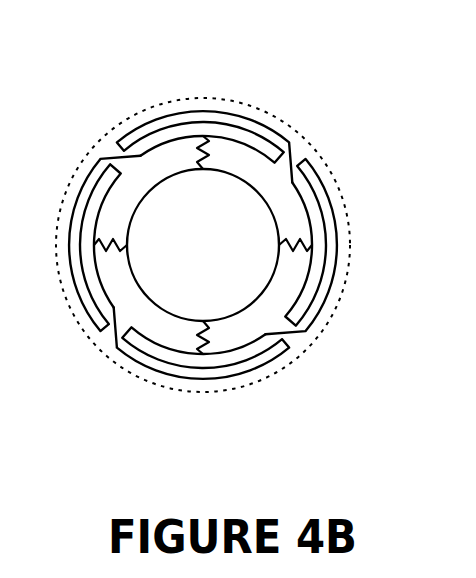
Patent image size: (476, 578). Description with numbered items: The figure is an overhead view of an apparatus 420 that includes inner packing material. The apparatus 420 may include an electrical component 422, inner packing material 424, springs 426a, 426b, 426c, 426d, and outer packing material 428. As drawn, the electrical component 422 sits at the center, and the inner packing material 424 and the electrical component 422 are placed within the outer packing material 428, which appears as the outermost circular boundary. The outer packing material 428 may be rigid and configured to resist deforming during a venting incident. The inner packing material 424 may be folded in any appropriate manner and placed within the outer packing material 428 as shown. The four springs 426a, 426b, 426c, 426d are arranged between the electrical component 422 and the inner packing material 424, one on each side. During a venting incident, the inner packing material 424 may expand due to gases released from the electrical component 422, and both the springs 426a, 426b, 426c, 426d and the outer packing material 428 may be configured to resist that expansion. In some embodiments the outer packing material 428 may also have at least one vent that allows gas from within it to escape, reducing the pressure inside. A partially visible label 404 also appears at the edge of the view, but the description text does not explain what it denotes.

The apparatus 420 is at (103, 48).
The electrical component 422 is at (140, 210).
The inner packing material 424 is at (295, 350).
The spring 426a is at (202, 134).
The spring 426b is at (93, 244).
The spring 426c is at (311, 245).
The spring 426d is at (202, 356).
The outer packing material 428 is at (131, 373).
The housing 404 is at (55, 247).